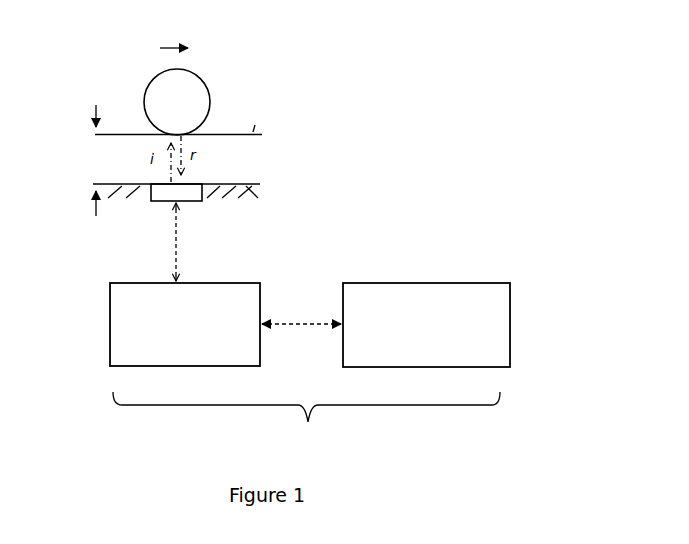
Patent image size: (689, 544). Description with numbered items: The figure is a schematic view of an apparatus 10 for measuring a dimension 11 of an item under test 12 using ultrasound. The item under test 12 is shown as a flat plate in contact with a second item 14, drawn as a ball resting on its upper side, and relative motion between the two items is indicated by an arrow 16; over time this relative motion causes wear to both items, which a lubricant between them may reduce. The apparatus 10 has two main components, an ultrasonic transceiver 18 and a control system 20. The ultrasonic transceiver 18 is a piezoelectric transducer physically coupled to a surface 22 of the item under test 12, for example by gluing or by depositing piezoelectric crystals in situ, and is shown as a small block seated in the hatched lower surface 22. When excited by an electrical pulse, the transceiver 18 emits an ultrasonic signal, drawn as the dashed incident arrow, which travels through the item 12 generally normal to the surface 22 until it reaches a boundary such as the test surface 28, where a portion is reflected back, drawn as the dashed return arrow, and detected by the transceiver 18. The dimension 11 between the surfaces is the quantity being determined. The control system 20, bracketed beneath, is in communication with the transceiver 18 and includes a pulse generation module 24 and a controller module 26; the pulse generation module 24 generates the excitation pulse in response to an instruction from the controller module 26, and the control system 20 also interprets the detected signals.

The apparatus 10 is at (466, 197).
The dimension 11 is at (101, 165).
The item under test 12 is at (255, 160).
The second item 14 is at (195, 100).
The arrow indicating relative motion 16 is at (190, 31).
The ultrasonic transceiver 18 is at (200, 200).
The control system 20 is at (306, 423).
The surface 22 is at (248, 185).
The pulse generation module 24 is at (200, 337).
The controller module 26 is at (440, 336).
The test surface 28 is at (255, 125).